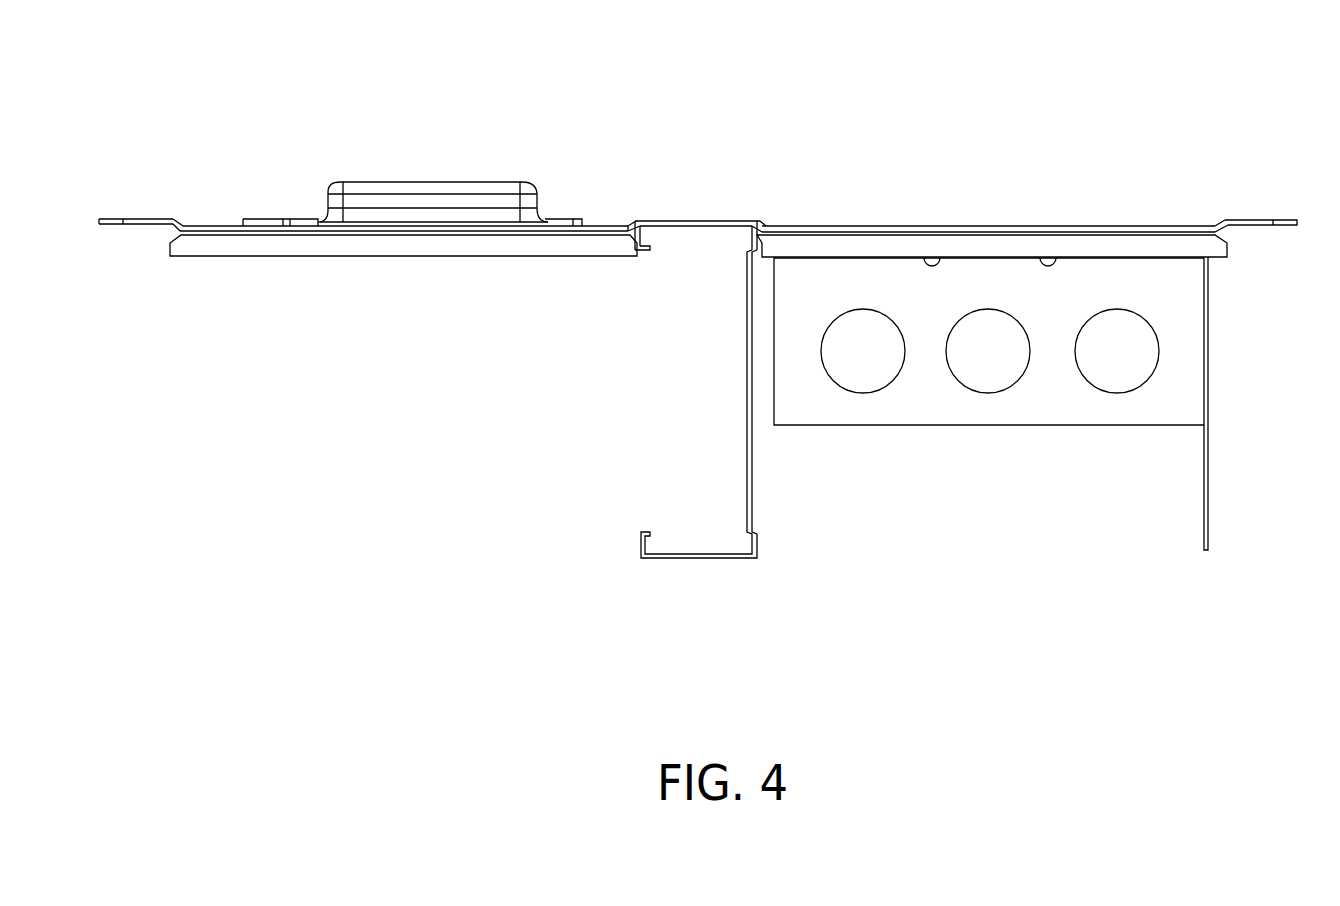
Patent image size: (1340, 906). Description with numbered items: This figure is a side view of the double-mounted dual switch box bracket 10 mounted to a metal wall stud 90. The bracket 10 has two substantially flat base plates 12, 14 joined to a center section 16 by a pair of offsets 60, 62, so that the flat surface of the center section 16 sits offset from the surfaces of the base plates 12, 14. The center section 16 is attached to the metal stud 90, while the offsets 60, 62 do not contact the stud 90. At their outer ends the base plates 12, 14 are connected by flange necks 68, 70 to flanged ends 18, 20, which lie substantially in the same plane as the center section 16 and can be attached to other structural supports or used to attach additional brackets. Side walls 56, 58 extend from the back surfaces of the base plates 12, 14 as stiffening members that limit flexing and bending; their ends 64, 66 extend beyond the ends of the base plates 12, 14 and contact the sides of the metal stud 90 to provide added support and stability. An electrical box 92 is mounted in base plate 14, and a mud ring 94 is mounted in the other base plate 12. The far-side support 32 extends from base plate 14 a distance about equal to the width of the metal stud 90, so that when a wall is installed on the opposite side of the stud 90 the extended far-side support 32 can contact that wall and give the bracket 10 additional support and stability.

The double-mounted dual switch box bracket 10 is at (152, 150).
The base plate 12 is at (213, 226).
The base plate 14 is at (1145, 226).
The center section 16 is at (694, 222).
The flanged end 18 is at (143, 217).
The flanged end 20 is at (1270, 222).
The far-side support 32 is at (1208, 518).
The side wall 56 is at (210, 250).
The side wall 58 is at (1207, 243).
The offset 60 is at (636, 222).
The offset 62 is at (762, 222).
The end of side wall 64 is at (636, 258).
The end of side wall 66 is at (765, 262).
The flange neck 68 is at (178, 222).
The flange neck 70 is at (1222, 222).
The metal wall stud 90 is at (700, 558).
The electrical box 92 is at (1033, 425).
The mud ring 94 is at (361, 182).